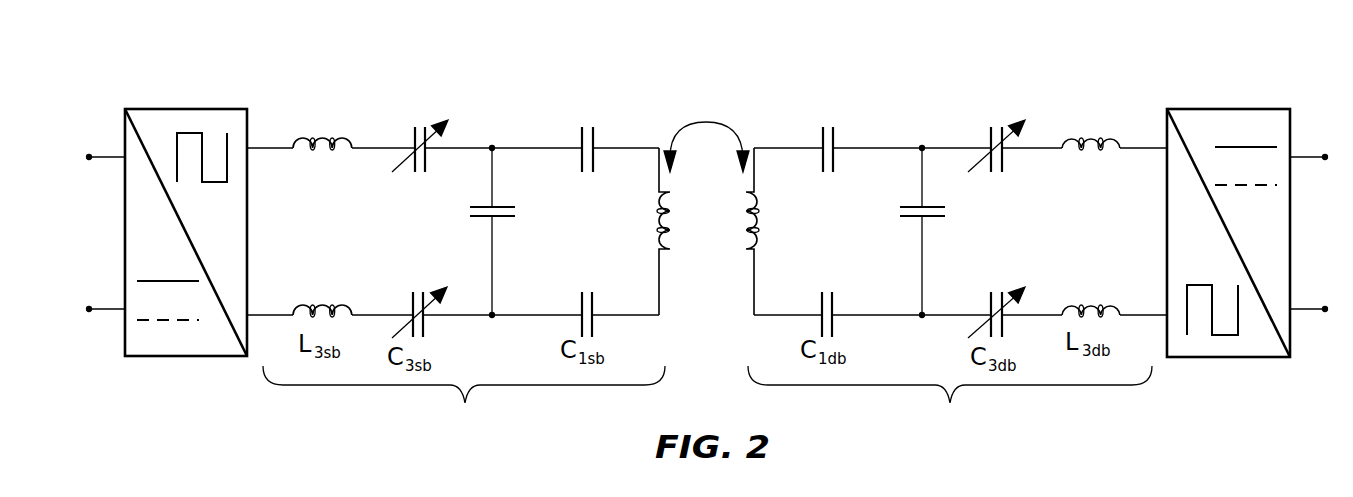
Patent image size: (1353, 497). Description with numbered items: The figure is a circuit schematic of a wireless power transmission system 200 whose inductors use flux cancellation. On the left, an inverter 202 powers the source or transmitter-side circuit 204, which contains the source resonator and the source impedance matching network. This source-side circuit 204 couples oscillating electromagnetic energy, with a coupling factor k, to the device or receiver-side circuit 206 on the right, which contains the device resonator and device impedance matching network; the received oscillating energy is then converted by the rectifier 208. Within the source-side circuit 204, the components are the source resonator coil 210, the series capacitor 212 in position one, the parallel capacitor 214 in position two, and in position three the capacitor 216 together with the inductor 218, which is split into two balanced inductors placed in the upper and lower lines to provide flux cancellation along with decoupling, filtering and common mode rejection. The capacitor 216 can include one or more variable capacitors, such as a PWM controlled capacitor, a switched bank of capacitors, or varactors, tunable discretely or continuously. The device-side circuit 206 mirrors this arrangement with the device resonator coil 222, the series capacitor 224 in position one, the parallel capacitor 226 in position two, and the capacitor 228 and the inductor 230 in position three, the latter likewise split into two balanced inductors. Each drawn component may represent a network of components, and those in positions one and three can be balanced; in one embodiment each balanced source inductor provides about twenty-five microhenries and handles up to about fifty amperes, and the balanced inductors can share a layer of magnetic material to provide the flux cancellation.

The wireless power transmission system 200 is at (876, 74).
The inverter 202 is at (155, 108).
The source or transmitter-side circuit 204 is at (464, 402).
The device or receiver-side circuit 206 is at (950, 402).
The rectifier 208 is at (1197, 108).
The source resonator coil Ls 210 is at (668, 252).
The series capacitor C1sa 212 is at (586, 168).
The parallel capacitor C2s 214 is at (498, 218).
The capacitor C3sa 216 is at (420, 172).
The inductor L3sa,b 218 is at (335, 160).
The device resonator coil Ld 222 is at (766, 228).
The series capacitor C1da 224 is at (826, 170).
The parallel capacitor C2d 226 is at (918, 220).
The capacitor C3db 228 is at (995, 172).
The inductor L3da,b 230 is at (1082, 160).